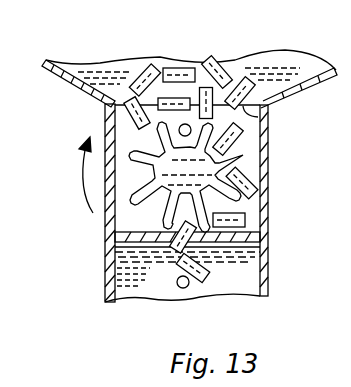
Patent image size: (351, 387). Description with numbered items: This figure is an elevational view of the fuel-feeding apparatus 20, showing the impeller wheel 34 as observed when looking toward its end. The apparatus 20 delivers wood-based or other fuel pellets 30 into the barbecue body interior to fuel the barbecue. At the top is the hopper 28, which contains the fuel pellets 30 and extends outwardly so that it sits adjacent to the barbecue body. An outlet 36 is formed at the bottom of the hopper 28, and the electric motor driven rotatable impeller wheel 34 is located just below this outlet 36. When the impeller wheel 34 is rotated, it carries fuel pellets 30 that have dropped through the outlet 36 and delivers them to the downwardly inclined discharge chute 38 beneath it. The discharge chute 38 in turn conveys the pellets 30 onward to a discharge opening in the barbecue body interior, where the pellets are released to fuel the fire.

The apparatus 20 is at (74, 97).
The hopper 28 is at (283, 72).
The fuel pellets 30 is at (126, 70).
The impeller wheel 34 is at (243, 150).
The outlet 36 is at (272, 118).
The discharge chute 38 is at (267, 284).